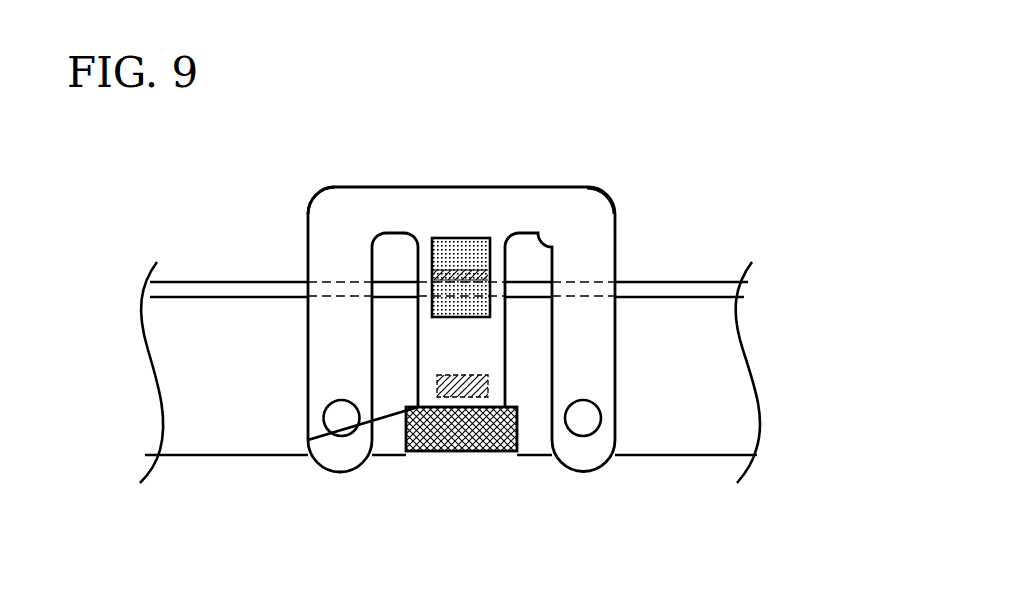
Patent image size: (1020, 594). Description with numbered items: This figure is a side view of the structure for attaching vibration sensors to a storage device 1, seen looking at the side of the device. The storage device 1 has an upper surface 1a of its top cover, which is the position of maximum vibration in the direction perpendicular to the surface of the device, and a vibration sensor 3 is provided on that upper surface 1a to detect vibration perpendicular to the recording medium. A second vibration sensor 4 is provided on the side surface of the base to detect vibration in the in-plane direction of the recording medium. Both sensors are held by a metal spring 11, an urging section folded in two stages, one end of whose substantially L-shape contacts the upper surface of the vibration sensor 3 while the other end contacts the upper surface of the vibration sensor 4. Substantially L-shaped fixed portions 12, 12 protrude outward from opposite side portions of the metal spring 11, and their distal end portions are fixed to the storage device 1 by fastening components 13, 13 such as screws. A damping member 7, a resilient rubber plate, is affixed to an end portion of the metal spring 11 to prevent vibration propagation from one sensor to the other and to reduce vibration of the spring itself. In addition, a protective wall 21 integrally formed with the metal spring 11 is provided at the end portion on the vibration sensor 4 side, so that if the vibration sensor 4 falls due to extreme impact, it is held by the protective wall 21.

The storage device 1 is at (692, 280).
The upper surface of the top cover 1a is at (652, 281).
The vibration sensor 3 is at (472, 271).
The vibration sensor 4 is at (475, 452).
The damping member 7 is at (468, 252).
The metal spring 11 is at (488, 186).
The fixed portion 12 is at (320, 223).
The fastening component 13 is at (341, 418).
The protective wall 21 is at (423, 453).